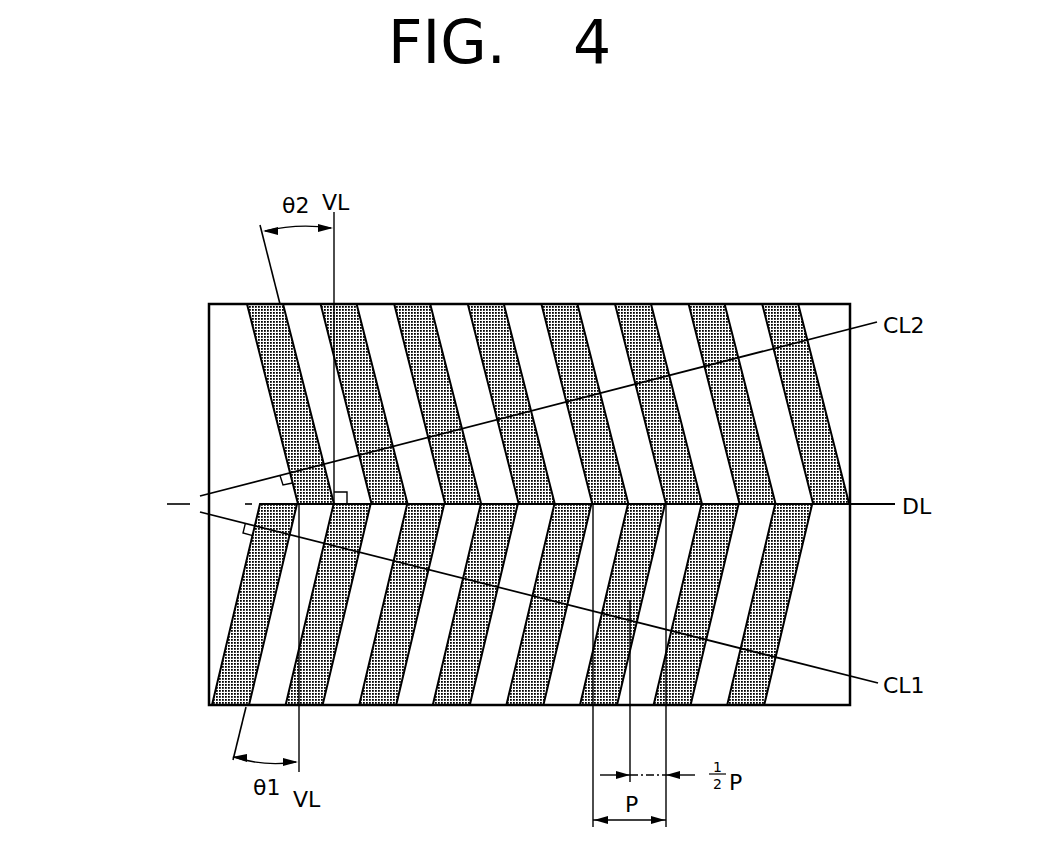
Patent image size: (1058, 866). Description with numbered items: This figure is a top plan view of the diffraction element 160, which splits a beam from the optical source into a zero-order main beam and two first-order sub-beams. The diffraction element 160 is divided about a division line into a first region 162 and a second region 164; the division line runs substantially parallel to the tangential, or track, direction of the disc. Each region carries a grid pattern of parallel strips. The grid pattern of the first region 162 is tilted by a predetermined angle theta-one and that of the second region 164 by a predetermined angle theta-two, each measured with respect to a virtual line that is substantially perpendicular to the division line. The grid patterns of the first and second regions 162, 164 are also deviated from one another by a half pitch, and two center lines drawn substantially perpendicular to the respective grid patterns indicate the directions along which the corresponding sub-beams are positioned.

The diffraction element 160 is at (456, 504).
The first region 162 is at (467, 604).
The second region 164 is at (190, 503).